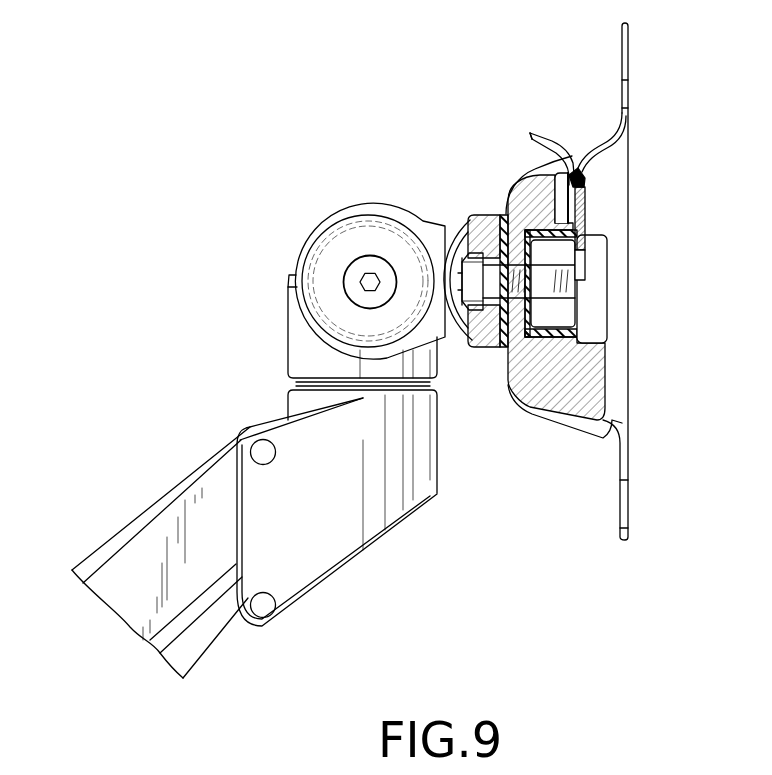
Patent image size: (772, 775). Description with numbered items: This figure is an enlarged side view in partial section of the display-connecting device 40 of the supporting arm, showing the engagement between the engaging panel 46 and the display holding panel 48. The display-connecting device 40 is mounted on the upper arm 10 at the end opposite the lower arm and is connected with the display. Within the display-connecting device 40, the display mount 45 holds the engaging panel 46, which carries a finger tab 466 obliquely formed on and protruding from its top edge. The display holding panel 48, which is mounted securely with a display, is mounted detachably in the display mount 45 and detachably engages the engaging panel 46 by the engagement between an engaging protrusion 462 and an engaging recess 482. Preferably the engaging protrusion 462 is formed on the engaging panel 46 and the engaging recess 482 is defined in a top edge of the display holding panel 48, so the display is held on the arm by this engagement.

The upper arm 10 is at (129, 488).
The display-connecting device 40 is at (305, 196).
The display mount 45 is at (555, 436).
The engaging panel 46 is at (555, 128).
The display holding panel 48 is at (623, 52).
The engaging protrusion 462 is at (584, 176).
The finger tab 466 is at (530, 136).
The engaging recess 482 is at (586, 185).